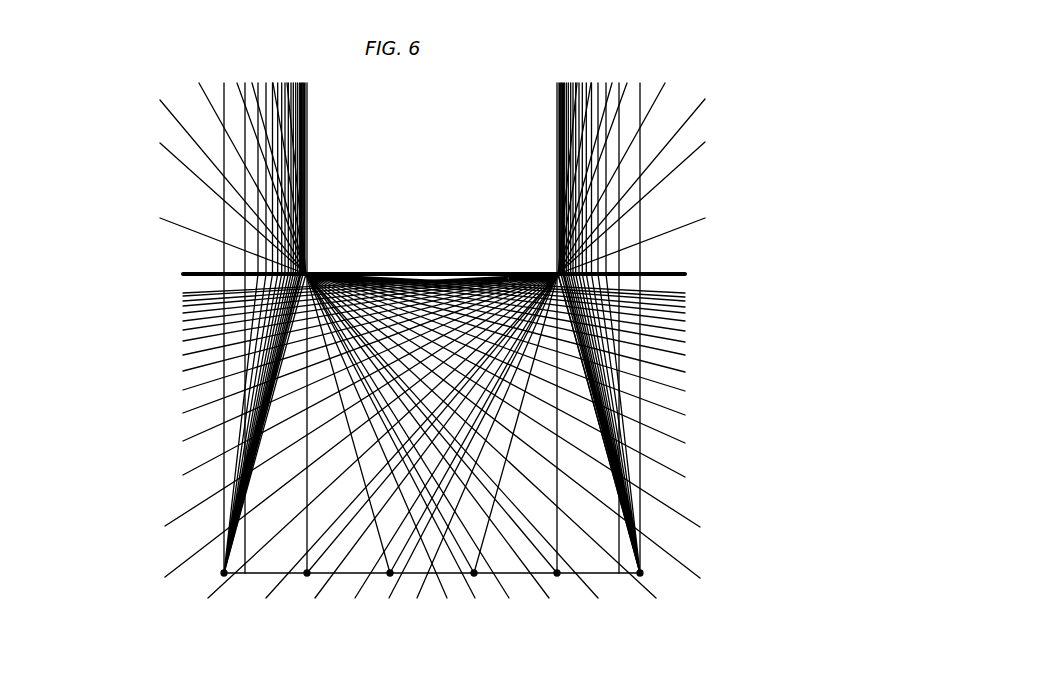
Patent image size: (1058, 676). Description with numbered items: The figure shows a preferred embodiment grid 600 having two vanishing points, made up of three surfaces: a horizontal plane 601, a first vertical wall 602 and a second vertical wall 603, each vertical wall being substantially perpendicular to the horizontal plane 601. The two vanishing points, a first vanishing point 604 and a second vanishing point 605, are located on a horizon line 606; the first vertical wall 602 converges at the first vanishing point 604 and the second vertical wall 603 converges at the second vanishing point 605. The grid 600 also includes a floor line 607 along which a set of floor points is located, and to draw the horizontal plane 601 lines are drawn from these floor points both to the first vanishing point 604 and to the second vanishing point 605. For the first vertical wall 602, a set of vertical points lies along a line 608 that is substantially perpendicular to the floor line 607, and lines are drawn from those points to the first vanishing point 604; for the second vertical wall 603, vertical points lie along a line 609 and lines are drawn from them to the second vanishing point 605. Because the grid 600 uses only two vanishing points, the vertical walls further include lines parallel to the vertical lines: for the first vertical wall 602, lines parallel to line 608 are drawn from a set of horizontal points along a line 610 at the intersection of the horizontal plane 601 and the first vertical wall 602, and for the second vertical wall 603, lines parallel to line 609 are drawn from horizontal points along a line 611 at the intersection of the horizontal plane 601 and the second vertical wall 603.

The grid 600 is at (573, 47).
The horizontal plane 601 is at (353, 576).
The first vertical wall 602 is at (232, 517).
The second vertical wall 603 is at (632, 517).
The first vanishing point 604 is at (308, 272).
The second vanishing point 605 is at (555, 272).
The horizon line 606 is at (437, 271).
The floor line 607 is at (440, 577).
The vertical points line 608 is at (222, 578).
The vertical points line 609 is at (643, 578).
The intersection line 610 is at (257, 473).
The intersection line 611 is at (607, 473).